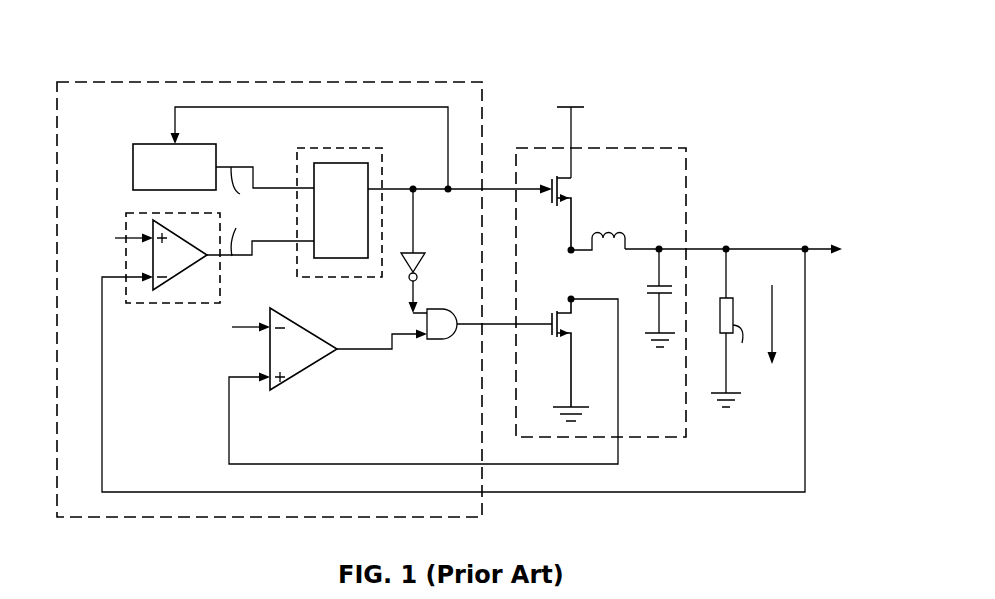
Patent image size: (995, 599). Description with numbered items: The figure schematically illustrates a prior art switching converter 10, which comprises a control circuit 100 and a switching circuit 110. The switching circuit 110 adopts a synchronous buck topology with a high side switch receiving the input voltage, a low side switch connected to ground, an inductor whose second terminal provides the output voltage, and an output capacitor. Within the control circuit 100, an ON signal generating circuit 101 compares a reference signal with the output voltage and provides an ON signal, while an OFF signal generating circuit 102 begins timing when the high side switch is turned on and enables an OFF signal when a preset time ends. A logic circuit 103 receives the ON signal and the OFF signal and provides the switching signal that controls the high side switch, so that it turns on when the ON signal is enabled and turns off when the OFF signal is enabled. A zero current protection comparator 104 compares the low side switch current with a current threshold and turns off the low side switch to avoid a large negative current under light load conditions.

The switching converter 10 is at (735, 130).
The control circuit 100 is at (370, 82).
The ON signal generating circuit 101 is at (220, 278).
The OFF signal generating circuit 102 is at (133, 160).
The logic circuit 103 is at (297, 163).
The zero current protection comparator 104 is at (297, 376).
The switching circuit 110 is at (686, 177).